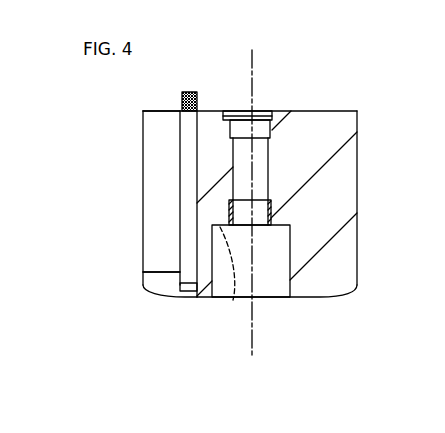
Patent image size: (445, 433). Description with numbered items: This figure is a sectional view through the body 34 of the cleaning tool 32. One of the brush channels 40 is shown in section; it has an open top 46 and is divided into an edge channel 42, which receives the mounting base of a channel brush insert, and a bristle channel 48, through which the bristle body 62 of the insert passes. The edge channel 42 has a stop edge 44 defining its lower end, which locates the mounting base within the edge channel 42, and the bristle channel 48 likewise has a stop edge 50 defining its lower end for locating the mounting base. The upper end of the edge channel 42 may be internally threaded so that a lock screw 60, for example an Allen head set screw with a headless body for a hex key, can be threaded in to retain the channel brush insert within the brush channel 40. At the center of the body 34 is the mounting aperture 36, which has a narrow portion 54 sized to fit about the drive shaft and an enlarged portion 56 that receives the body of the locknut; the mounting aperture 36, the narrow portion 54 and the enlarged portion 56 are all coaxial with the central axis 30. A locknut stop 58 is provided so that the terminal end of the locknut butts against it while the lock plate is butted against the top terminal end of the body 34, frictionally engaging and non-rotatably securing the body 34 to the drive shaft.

The central axis 30 is at (255, 63).
The cleaning tool 32 is at (343, 293).
The body 34 is at (378, 163).
The mounting aperture 36 is at (234, 104).
The brush channel 40 is at (140, 130).
The edge channel 42 is at (190, 182).
The stop edge 44 is at (183, 281).
The open top 46 is at (157, 111).
The bristle channel 48 is at (160, 212).
The stop edge 50 is at (163, 270).
The narrow portion 54 is at (262, 119).
The enlarged portion 56 is at (289, 269).
The locknut stop 58 is at (233, 300).
The lock screw 60 is at (182, 92).
The bristle body 62 is at (164, 296).